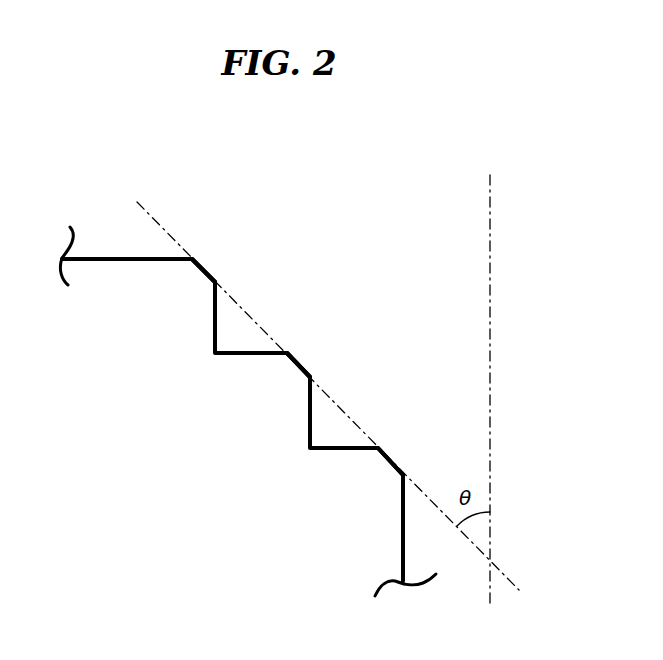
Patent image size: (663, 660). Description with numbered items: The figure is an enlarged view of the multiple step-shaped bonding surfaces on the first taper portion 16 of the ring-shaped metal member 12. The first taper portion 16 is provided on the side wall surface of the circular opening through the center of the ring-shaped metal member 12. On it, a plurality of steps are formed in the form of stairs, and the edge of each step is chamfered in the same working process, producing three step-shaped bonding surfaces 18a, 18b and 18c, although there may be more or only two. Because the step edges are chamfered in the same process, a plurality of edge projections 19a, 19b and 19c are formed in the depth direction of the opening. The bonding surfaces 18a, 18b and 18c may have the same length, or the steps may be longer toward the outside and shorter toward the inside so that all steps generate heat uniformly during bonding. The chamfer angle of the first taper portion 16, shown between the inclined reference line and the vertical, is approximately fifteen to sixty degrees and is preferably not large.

The ring-shaped metal member 12 is at (107, 296).
The first taper portion 16 is at (260, 325).
The step-shaped bonding surface 18a is at (205, 276).
The step-shaped bonding surface 18b is at (296, 366).
The step-shaped bonding surface 18c is at (390, 459).
The edge projection 19a is at (198, 292).
The edge projection 19b is at (292, 385).
The edge projection 19c is at (379, 482).